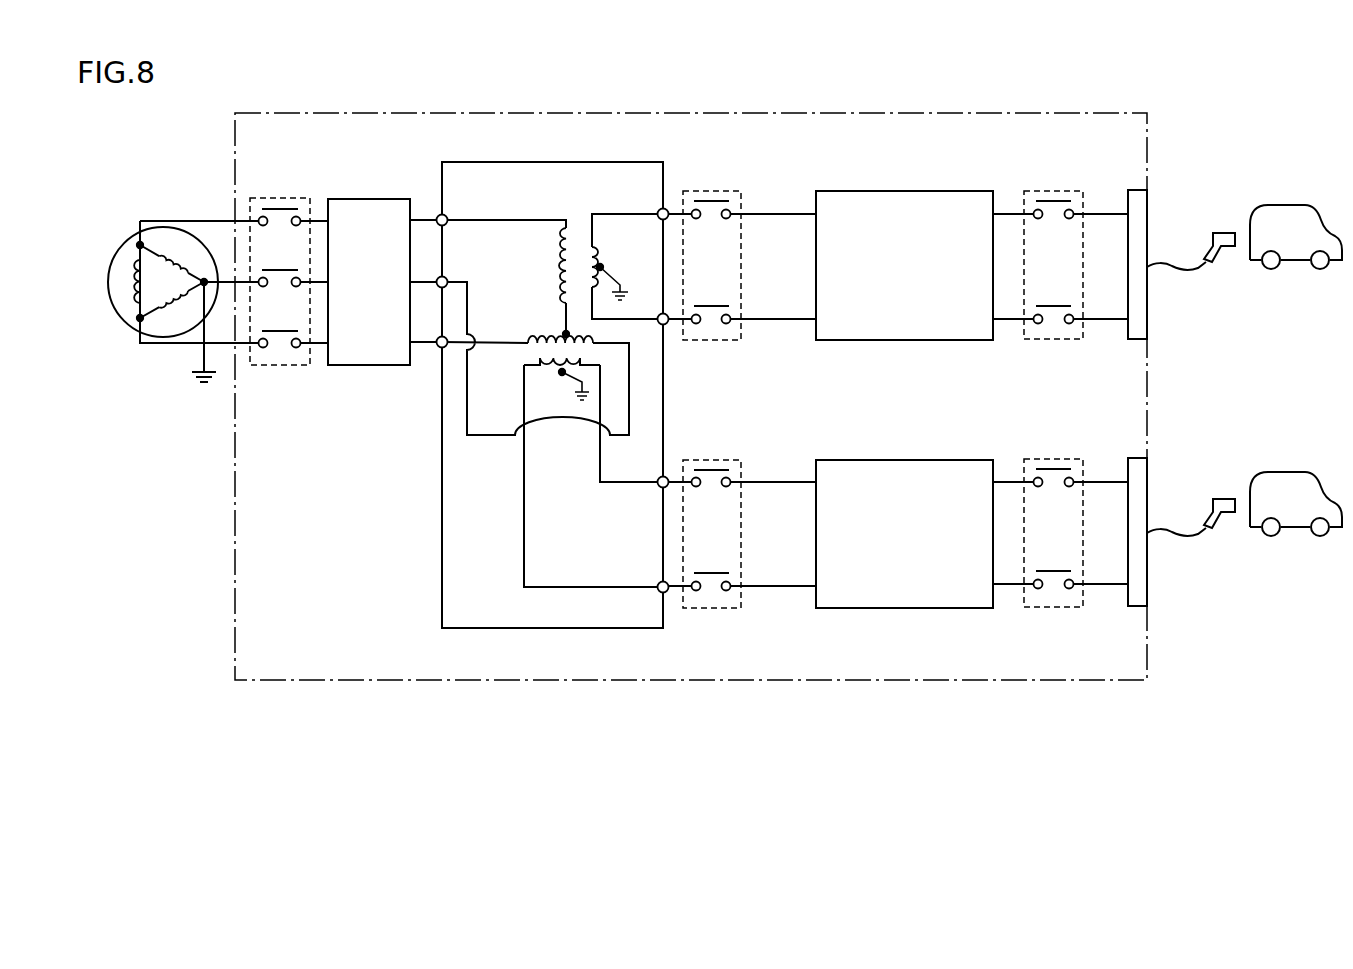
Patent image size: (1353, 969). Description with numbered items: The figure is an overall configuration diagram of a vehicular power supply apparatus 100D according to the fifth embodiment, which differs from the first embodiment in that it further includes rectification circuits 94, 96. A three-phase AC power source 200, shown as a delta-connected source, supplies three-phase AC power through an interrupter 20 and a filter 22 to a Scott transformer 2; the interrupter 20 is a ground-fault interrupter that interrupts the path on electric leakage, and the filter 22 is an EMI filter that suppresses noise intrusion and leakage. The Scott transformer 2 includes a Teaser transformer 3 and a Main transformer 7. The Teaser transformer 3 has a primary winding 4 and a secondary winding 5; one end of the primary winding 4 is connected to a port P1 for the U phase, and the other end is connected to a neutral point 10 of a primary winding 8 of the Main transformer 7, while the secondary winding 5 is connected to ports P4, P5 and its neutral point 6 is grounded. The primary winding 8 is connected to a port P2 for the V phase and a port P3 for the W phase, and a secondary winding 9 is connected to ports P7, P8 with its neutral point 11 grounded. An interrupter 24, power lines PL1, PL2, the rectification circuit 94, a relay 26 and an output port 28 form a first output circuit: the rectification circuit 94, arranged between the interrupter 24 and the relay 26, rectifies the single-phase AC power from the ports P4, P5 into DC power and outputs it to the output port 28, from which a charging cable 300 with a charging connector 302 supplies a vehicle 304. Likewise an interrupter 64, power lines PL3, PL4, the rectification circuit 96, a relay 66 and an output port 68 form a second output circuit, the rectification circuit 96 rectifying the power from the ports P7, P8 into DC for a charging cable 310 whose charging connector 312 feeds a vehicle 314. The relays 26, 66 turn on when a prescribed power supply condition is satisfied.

The vehicular power supply apparatus 100D is at (1065, 112).
The three-phase AC power source 200 is at (118, 262).
The interrupter 20 is at (285, 198).
The filter 22 is at (370, 199).
The Scott transformer 2 is at (616, 162).
The Teaser transformer 3 is at (552, 252).
The primary winding 4 is at (560, 266).
The secondary winding 5 is at (598, 254).
The neutral point 6 is at (604, 267).
The Main transformer 7 is at (552, 434).
The primary winding 8 is at (530, 336).
The secondary winding 9 is at (553, 363).
The neutral point 10 is at (564, 331).
The neutral point 11 is at (563, 376).
The port P1 is at (447, 224).
The port P2 is at (447, 278).
The port P3 is at (440, 348).
The port P4 is at (658, 210).
The port P5 is at (666, 325).
The port P7 is at (658, 478).
The port P8 is at (658, 583).
The interrupter 24 is at (713, 191).
The power line PL1 is at (775, 212).
The power line PL2 is at (773, 326).
The rectification circuit 94 is at (903, 191).
The relay 26 is at (1057, 191).
The output port 28 is at (1133, 190).
The charging cable 300 is at (1170, 262).
The charging connector 302 is at (1220, 233).
The vehicle 304 is at (1285, 205).
The interrupter 64 is at (713, 460).
The power line PL3 is at (775, 480).
The power line PL4 is at (773, 592).
The rectification circuit 96 is at (903, 460).
The relay 66 is at (1057, 459).
The output port 68 is at (1133, 458).
The charging cable 310 is at (1170, 528).
The charging connector 312 is at (1220, 499).
The vehicle 314 is at (1285, 472).